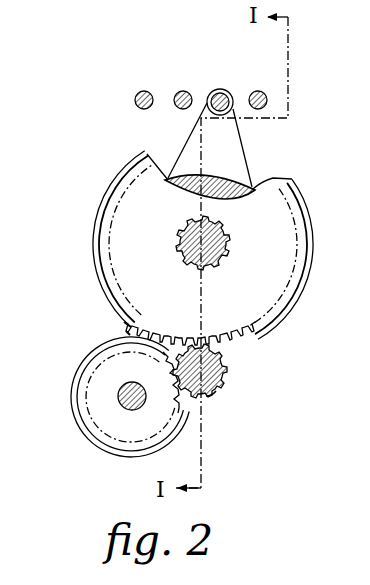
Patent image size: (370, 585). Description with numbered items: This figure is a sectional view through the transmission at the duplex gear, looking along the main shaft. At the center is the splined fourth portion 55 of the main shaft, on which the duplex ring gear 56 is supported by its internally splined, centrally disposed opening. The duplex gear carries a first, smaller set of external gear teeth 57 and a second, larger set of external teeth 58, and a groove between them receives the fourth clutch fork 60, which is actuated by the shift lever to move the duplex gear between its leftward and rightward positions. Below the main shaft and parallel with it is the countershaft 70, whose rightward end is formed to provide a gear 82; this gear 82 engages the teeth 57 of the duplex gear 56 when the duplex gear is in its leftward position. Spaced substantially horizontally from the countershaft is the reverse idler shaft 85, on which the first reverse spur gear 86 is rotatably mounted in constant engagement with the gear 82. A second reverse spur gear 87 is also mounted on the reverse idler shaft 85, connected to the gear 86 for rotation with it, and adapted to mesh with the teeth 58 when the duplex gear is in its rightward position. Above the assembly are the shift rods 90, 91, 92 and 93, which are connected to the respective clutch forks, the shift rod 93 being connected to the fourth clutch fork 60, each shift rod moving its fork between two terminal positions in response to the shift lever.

The fourth portion of the main shaft 55 is at (218, 257).
The duplex ring gear 56 is at (90, 210).
The first set of external gear teeth 57 is at (253, 340).
The second set of external teeth 58 is at (133, 331).
The fourth clutch fork 60 is at (232, 153).
The countershaft 70 is at (222, 378).
The gear 82 is at (213, 395).
The reverse idler shaft 85 is at (128, 404).
The first reverse spur gear 86 is at (180, 413).
The second reverse spur gear 87 is at (128, 337).
The shift rod 90 is at (178, 93).
The shift rod 91 is at (135, 99).
The shift rod 92 is at (263, 92).
The shift rod 93 is at (215, 89).